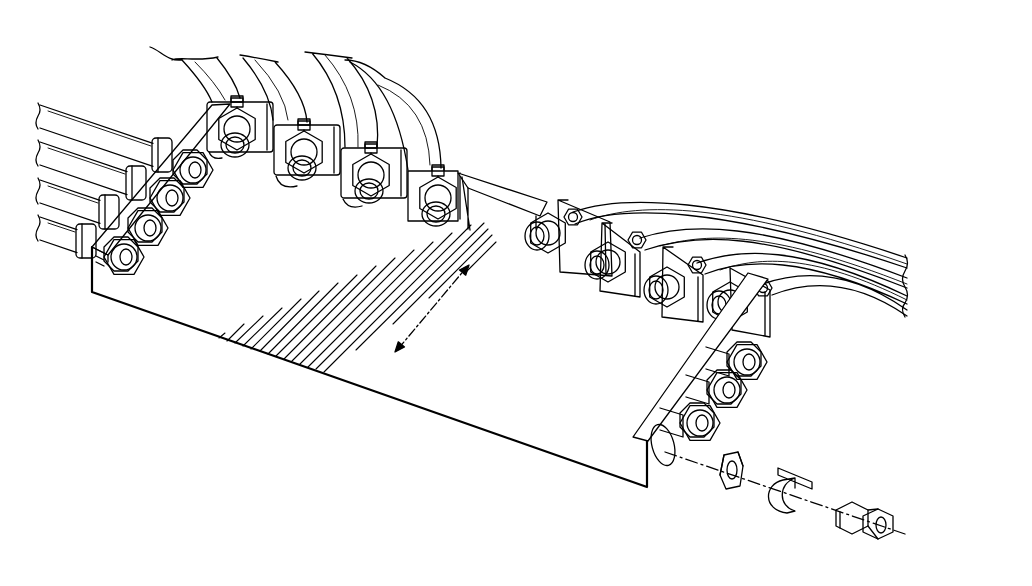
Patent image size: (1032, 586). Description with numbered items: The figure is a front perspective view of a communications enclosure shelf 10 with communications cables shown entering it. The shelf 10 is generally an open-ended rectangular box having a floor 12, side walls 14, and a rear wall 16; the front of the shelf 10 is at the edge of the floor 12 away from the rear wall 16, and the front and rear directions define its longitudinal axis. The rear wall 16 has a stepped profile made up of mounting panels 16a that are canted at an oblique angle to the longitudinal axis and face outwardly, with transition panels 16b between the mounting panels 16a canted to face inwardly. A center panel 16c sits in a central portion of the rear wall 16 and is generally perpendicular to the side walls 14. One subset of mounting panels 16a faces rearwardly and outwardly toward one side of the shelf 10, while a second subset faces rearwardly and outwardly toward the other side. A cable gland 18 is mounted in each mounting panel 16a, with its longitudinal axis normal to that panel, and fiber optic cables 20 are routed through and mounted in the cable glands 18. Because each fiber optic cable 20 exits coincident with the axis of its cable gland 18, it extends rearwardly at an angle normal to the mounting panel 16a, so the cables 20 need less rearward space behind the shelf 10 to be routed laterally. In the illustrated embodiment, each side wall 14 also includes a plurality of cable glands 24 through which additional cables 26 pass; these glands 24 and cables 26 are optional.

The shelf 10 is at (537, 94).
The floor 12 is at (407, 387).
The side walls 14 is at (100, 276).
The rear wall 16 is at (604, 180).
The mounting panels 16a is at (412, 222).
The transition panels 16b is at (395, 198).
The center panel 16c is at (497, 220).
The cable gland 18 is at (297, 186).
The fiber optic cables 20 is at (197, 90).
The cable glands 24 is at (165, 243).
The additional cables 26 is at (97, 130).